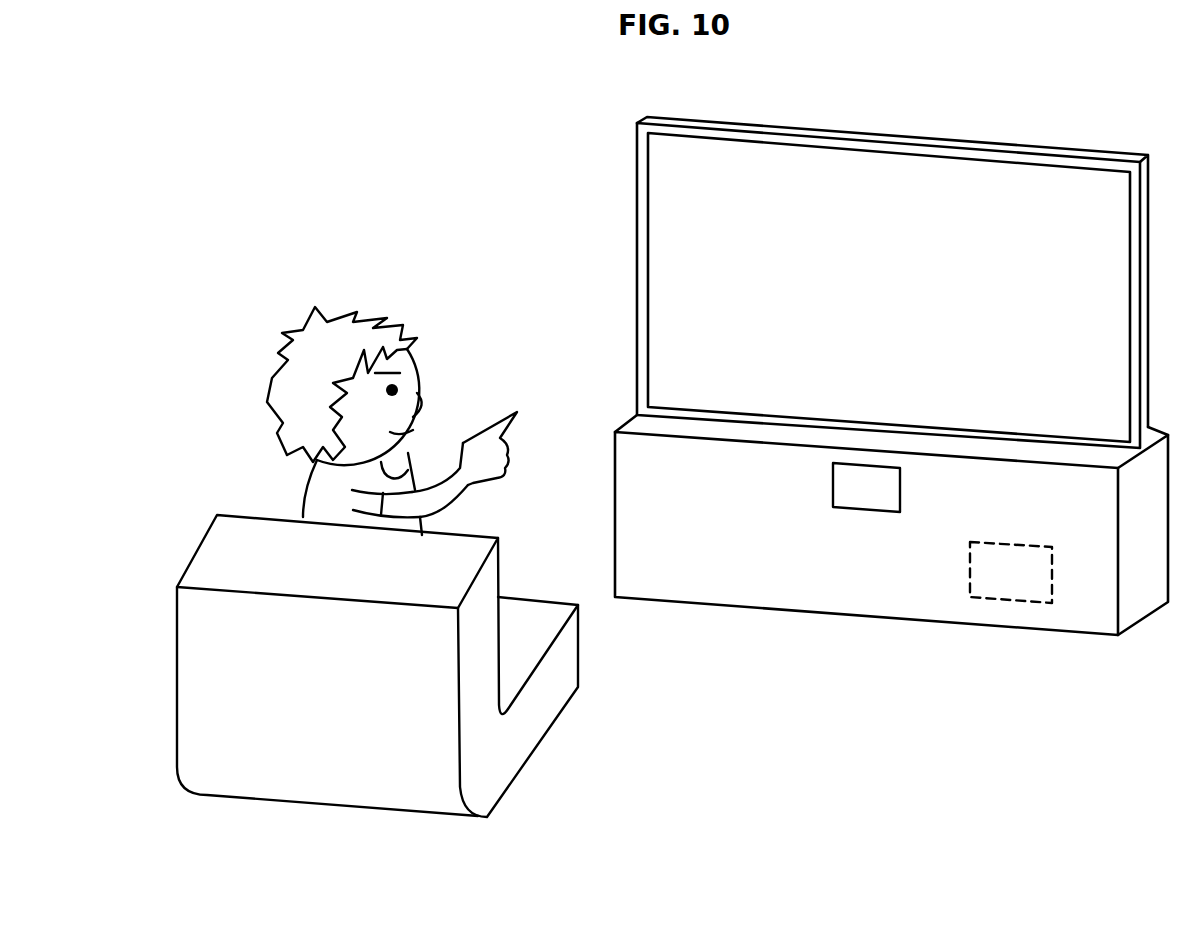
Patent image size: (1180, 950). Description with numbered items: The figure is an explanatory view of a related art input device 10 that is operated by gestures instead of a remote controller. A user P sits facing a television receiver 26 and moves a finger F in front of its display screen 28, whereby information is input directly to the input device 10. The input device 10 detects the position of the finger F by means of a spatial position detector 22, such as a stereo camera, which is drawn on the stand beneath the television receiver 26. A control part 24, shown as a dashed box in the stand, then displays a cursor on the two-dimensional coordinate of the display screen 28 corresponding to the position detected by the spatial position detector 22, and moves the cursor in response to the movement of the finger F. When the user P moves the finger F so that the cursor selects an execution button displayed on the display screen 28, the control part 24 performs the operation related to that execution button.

The input device 10 is at (610, 112).
The television receiver 26 is at (895, 133).
The display screen 28 is at (663, 268).
The spatial position detector 22 is at (867, 513).
The control part 24 is at (1013, 603).
The user P is at (307, 336).
The finger F is at (502, 415).